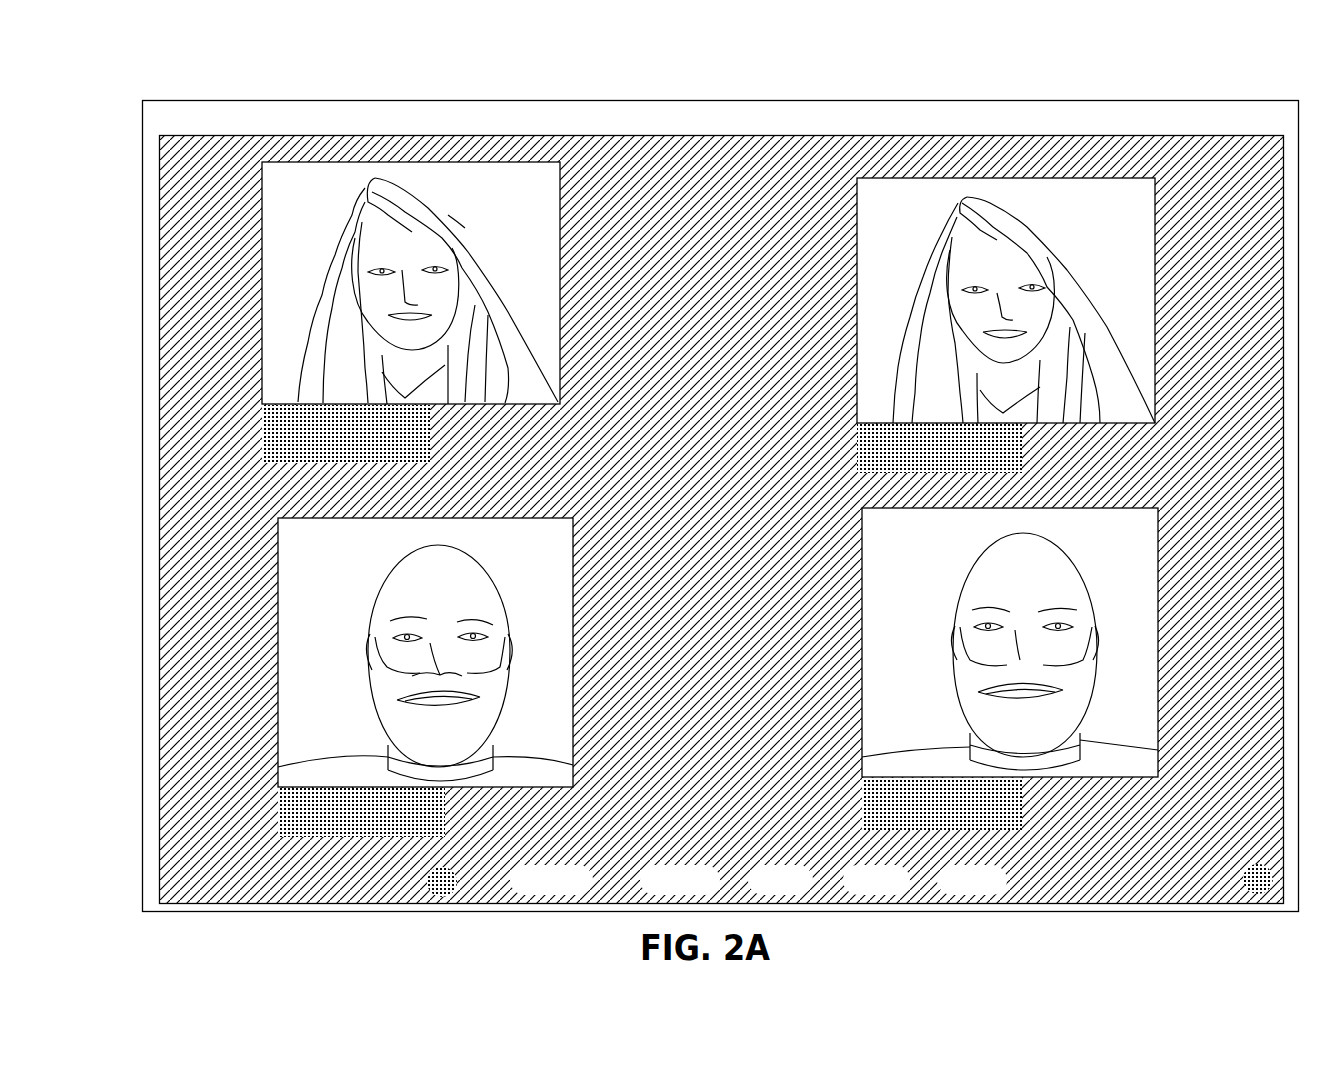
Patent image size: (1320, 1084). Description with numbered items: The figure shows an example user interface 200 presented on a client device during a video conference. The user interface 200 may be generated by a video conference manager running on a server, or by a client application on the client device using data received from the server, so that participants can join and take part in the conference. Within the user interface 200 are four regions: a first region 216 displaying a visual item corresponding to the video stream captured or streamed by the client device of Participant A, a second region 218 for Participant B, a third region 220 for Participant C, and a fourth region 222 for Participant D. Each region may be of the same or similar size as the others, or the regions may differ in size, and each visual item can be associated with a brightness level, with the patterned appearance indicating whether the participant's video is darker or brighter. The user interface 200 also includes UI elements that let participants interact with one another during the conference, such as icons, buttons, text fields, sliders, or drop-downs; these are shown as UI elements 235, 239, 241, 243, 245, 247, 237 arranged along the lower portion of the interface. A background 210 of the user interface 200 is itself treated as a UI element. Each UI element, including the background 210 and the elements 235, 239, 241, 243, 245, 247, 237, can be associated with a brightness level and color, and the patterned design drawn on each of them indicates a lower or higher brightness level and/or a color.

The user interface 200 is at (251, 98).
The background 210 is at (172, 218).
The first region 216 is at (411, 312).
The second region 218 is at (425, 677).
The third region 220 is at (1006, 325).
The fourth region 222 is at (1010, 669).
The UI element 235 is at (466, 884).
The UI element 237 is at (1265, 898).
The UI element 239 is at (551, 880).
The UI element 241 is at (680, 880).
The UI element 243 is at (780, 880).
The UI element 245 is at (876, 880).
The UI element 247 is at (972, 880).